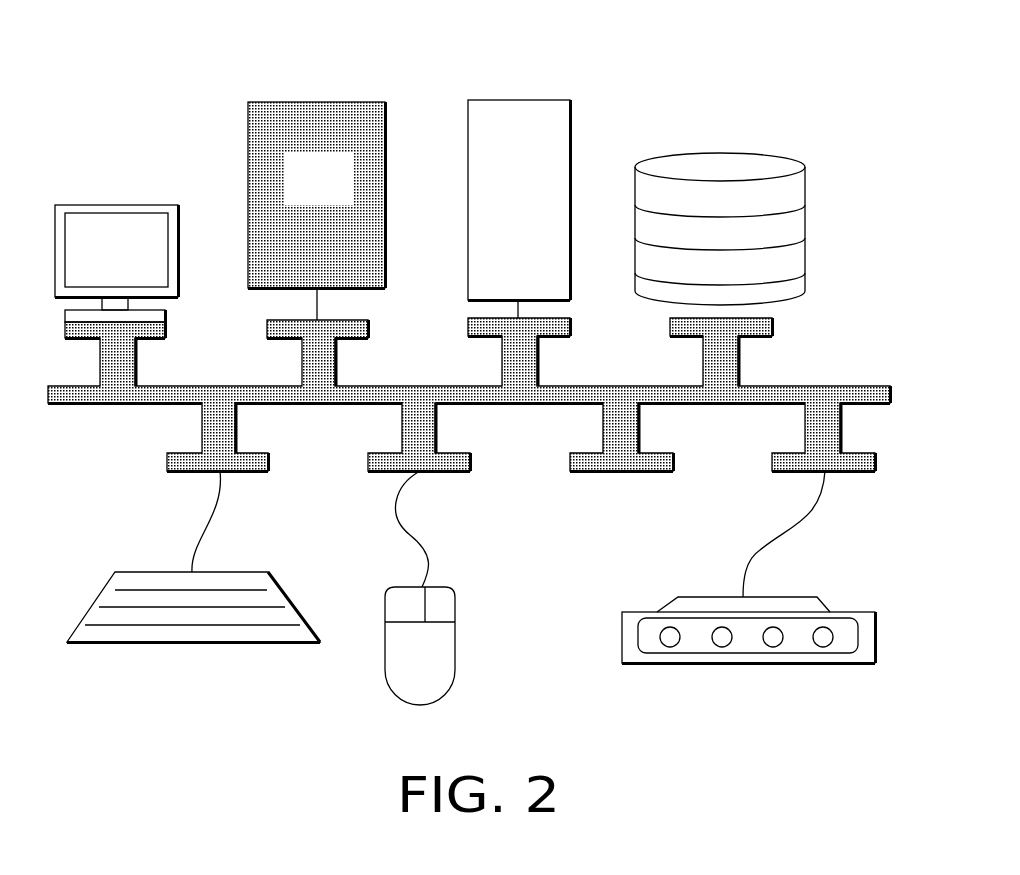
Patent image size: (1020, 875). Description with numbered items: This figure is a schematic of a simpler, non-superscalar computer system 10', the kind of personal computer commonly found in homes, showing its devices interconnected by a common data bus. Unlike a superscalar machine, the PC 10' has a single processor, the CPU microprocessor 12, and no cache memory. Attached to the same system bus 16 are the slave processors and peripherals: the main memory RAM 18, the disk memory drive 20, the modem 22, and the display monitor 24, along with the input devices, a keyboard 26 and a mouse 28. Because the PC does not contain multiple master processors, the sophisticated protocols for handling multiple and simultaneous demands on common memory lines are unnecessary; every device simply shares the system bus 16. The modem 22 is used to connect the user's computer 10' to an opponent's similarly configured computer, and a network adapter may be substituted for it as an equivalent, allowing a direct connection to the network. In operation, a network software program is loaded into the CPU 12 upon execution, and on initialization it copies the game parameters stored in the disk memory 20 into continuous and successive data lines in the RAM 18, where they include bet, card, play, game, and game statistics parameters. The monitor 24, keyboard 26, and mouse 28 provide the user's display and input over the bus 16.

The computer system 10' is at (469, 381).
The CPU 12 is at (523, 100).
The system bus 16 is at (847, 386).
The main memory RAM 18 is at (328, 102).
The disk memory 20 is at (727, 148).
The modem 22 is at (622, 633).
The monitor 24 is at (118, 205).
The keyboard 26 is at (97, 598).
The mouse 28 is at (455, 640).